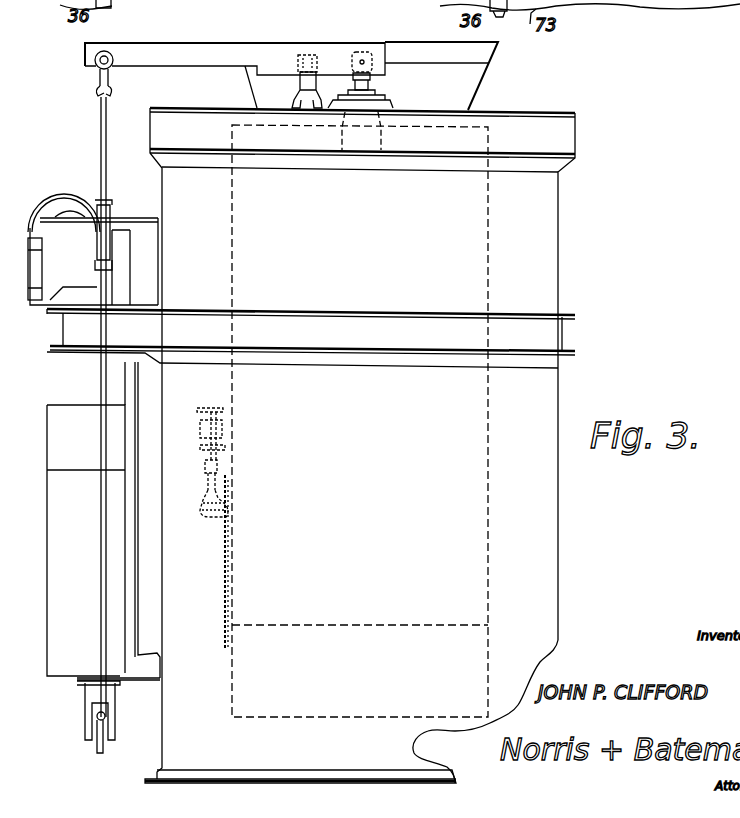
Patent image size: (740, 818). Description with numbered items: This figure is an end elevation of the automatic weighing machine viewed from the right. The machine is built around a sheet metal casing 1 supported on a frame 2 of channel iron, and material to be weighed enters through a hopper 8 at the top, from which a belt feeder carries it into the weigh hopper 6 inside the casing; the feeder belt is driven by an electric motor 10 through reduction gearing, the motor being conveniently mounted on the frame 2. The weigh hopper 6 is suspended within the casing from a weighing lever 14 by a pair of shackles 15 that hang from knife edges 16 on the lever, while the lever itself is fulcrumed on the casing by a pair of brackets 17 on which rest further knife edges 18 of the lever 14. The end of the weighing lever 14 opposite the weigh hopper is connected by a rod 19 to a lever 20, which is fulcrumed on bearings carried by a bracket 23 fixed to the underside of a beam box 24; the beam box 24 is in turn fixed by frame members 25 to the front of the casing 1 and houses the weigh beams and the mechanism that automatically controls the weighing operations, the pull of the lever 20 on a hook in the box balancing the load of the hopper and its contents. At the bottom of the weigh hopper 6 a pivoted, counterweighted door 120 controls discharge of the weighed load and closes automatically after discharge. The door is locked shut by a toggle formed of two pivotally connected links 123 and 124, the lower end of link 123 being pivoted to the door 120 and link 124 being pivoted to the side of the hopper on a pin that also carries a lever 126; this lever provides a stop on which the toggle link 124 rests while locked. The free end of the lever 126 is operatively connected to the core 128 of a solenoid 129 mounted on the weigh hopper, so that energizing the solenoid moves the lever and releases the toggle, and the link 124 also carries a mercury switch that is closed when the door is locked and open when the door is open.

The casing 1 is at (550, 513).
The frame 2 is at (563, 332).
The weigh hopper 6 is at (482, 558).
The hopper 8 is at (468, 90).
The electric motor 10 is at (60, 202).
The weighing lever 14 is at (150, 50).
The shackles 15 is at (372, 90).
The knife edges 16 is at (365, 58).
The brackets 17 is at (298, 84).
The knife edges 18 is at (308, 53).
The rod 19 is at (107, 173).
The lever 20 is at (103, 753).
The bracket 23 is at (115, 699).
The beam box 24 is at (103, 542).
The frame members 25 is at (133, 607).
The door 120 is at (314, 716).
The toggle link 123 is at (222, 562).
The toggle link 124 is at (230, 483).
The lever 126 is at (208, 517).
The solenoid core 128 is at (220, 463).
The solenoid 129 is at (228, 430).